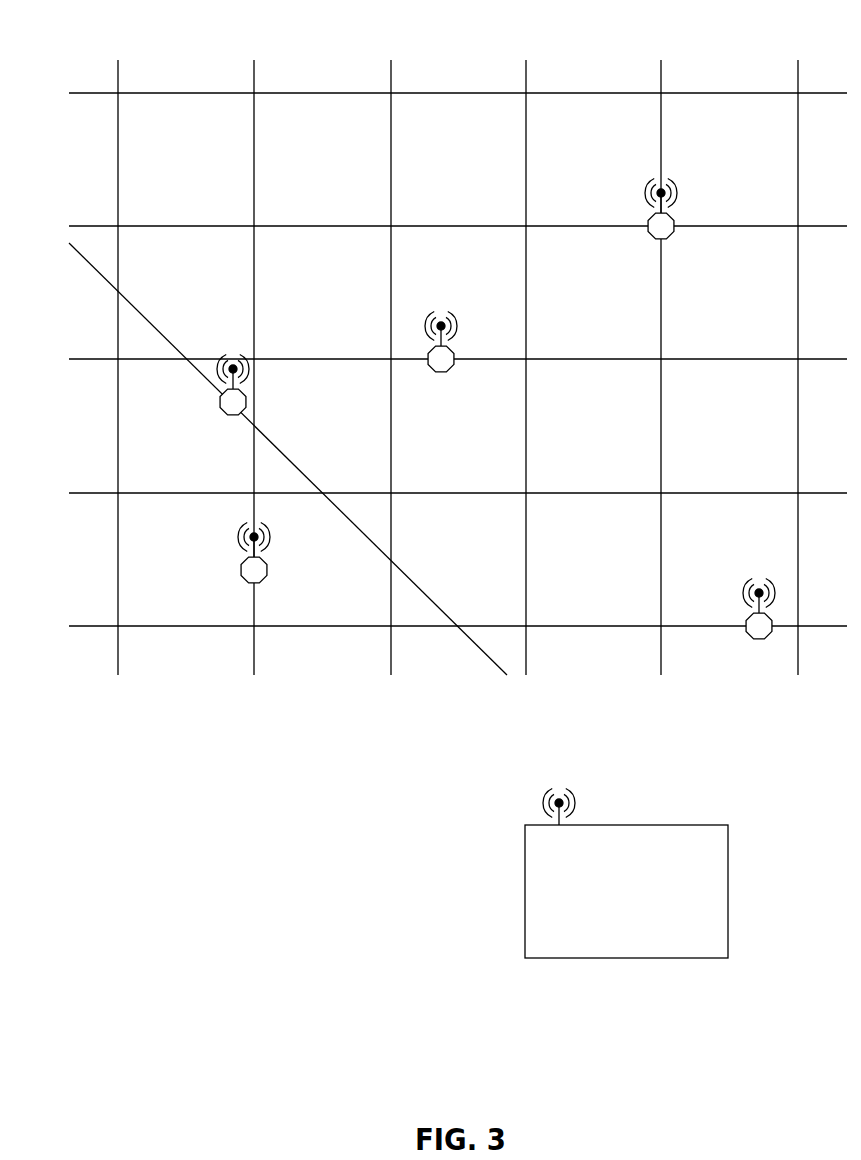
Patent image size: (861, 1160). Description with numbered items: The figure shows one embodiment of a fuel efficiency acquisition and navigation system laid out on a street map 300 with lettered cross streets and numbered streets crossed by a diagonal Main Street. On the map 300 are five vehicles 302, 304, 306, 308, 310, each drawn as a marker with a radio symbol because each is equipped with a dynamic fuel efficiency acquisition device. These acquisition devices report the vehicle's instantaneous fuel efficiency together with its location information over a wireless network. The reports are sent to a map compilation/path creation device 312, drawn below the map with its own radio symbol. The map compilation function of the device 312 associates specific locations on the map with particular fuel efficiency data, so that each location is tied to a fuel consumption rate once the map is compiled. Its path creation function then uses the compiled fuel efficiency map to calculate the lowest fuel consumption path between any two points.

The map 300 is at (68, 33).
The vehicle 302 is at (665, 239).
The vehicle 304 is at (441, 372).
The vehicle 306 is at (237, 415).
The vehicle 308 is at (266, 576).
The vehicle 310 is at (759, 639).
The map compilation/path creation device 312 is at (661, 825).